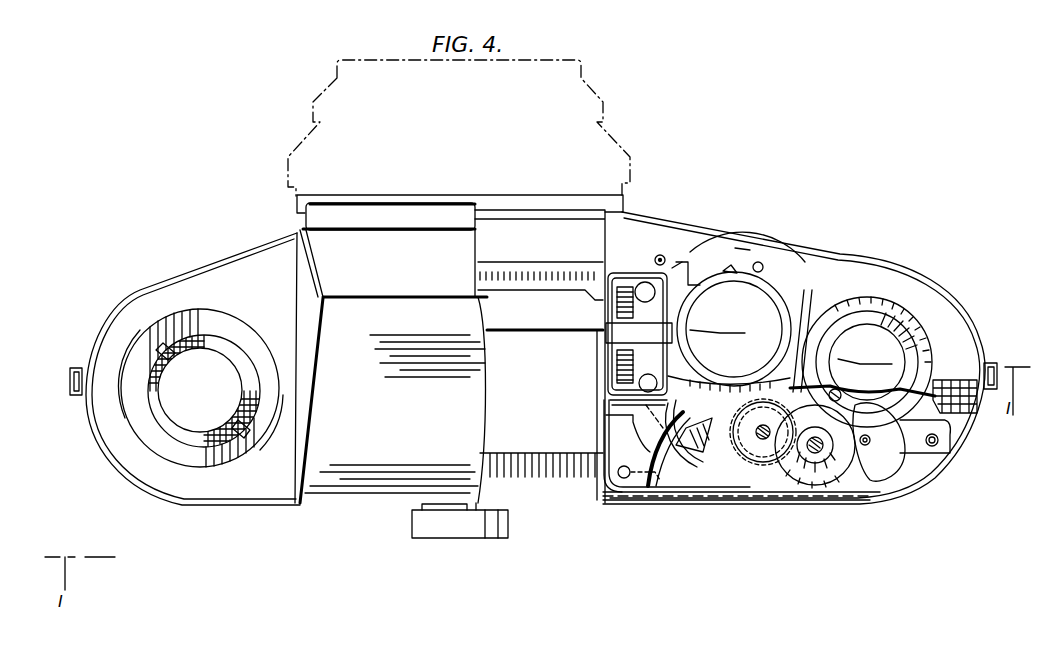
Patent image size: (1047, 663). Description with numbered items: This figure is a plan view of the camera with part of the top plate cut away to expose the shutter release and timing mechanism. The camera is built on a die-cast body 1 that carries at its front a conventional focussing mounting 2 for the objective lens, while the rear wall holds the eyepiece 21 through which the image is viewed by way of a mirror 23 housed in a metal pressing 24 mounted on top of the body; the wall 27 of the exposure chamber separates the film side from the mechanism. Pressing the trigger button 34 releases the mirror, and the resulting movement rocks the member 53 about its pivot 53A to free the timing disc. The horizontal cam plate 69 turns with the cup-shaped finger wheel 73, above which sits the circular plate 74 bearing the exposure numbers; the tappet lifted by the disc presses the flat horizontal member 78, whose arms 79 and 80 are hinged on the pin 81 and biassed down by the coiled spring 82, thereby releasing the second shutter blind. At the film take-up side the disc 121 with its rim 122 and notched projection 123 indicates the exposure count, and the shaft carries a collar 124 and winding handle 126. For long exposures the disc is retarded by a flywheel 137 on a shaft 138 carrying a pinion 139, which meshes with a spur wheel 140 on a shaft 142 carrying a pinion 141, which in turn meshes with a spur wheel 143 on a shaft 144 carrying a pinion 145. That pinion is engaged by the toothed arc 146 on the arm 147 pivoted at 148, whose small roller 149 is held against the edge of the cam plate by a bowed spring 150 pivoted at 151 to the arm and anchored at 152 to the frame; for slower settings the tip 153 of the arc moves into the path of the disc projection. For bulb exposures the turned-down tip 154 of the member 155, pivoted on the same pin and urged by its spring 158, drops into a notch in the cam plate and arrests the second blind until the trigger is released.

The die-cast body 1 is at (800, 256).
The focussing mounting 2 is at (577, 150).
The eyepiece 21 is at (462, 522).
The mirror 23 is at (506, 310).
The metal pressing 24 is at (470, 400).
The wall of the exposure chamber 27 is at (603, 243).
The trigger button 34 is at (738, 254).
The member 53 is at (680, 256).
The pivot 53A is at (684, 260).
The cam plate 69 is at (758, 262).
The cup-shaped finger wheel 73 is at (805, 268).
The circular plate 74 is at (745, 312).
The flat horizontal member 78 is at (746, 281).
The arm 79 is at (655, 250).
The arm 80 is at (660, 412).
The pin 81 is at (628, 272).
The coiled spring 82 is at (610, 369).
The disc 121 is at (915, 373).
The rim 122 is at (925, 360).
The notched projection 123 is at (928, 348).
The collar 124 is at (877, 348).
The winding handle 126 is at (845, 323).
The flywheel 137 is at (885, 488).
The shaft 138 is at (871, 439).
The pinion 139 is at (872, 470).
The spur wheel 140 is at (845, 458).
The pinion 141 is at (818, 438).
The shaft 142 is at (817, 458).
The spur wheel 143 is at (757, 458).
The shaft 144 is at (758, 437).
The pinion 145 is at (772, 443).
The toothed arc 146 is at (690, 452).
The arm 147 is at (701, 434).
The pivot 148 is at (607, 318).
The small roller 149 is at (612, 404).
The bowed spring 150 is at (656, 506).
The pivot 151 is at (684, 432).
The anchorage 152 is at (626, 479).
The tip 153 is at (754, 387).
The turned-down tip 154 is at (639, 333).
The member 155 is at (612, 355).
The spring 158 is at (603, 300).